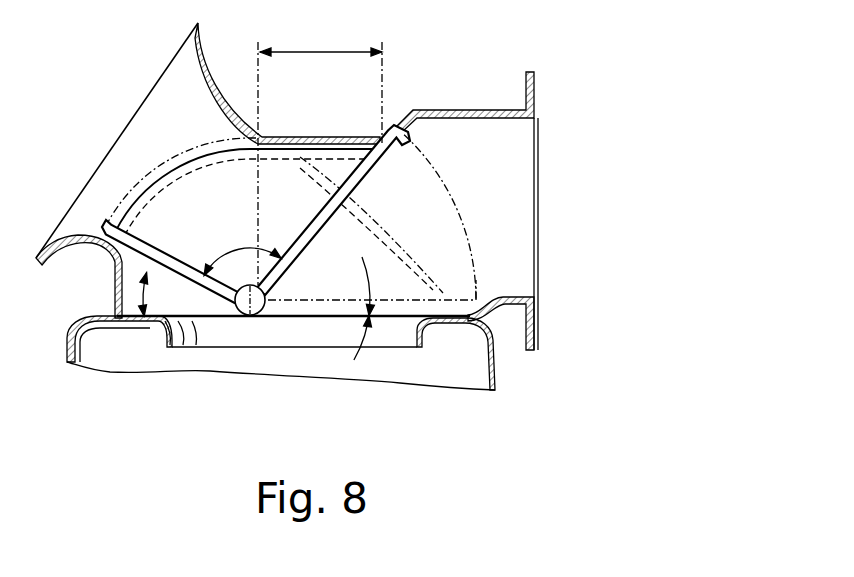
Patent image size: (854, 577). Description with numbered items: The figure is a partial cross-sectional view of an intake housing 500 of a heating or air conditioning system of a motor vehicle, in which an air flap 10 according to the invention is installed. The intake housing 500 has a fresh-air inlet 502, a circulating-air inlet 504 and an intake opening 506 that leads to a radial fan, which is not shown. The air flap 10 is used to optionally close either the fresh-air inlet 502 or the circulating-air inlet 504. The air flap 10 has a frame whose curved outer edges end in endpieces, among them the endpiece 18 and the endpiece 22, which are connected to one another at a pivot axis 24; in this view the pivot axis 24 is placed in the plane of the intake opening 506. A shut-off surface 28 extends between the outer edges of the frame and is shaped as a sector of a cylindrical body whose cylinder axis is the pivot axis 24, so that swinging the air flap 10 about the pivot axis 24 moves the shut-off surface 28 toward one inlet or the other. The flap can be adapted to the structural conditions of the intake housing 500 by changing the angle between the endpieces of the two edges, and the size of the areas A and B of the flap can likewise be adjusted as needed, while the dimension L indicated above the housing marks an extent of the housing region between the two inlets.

The air flap 10 is at (128, 184).
The endpiece 18 is at (328, 203).
The endpiece 22 is at (203, 328).
The pivot axis 24 is at (242, 137).
The shut-off surface 28 is at (193, 157).
The intake housing 500 is at (414, 96).
The fresh-air inlet 502 is at (492, 140).
The circulating-air inlet 504 is at (130, 147).
The intake opening 506 is at (312, 333).
The area A is at (372, 182).
The area B is at (137, 256).
The length L is at (308, 52).